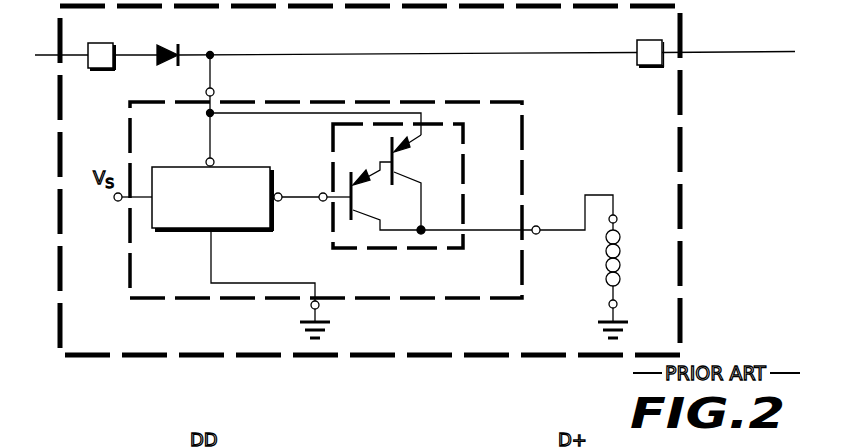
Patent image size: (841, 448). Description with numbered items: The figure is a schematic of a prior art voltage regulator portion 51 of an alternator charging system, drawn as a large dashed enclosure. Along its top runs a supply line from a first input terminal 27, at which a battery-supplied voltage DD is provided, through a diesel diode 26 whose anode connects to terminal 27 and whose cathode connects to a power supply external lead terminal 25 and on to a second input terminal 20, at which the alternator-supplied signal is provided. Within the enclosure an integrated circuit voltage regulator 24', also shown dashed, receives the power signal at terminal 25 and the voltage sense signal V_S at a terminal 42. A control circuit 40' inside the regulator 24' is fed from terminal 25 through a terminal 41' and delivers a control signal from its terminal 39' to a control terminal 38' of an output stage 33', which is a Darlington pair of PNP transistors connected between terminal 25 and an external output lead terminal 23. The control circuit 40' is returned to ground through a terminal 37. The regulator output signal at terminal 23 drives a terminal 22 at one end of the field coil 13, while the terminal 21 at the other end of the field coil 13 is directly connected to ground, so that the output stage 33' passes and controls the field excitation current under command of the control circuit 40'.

The field coil 13 is at (621, 252).
The second input terminal 20 is at (637, 66).
The terminal 21 is at (618, 304).
The terminal 22 is at (618, 219).
The external output lead terminal 23 is at (540, 227).
The integrated circuit voltage regulator 24' is at (326, 180).
The power supply external lead terminal 25 is at (214, 93).
The diesel diode 26 is at (178, 46).
The first input terminal 27 is at (101, 71).
The output stage 33' is at (425, 186).
The ground terminal 37 is at (311, 308).
The control terminal 38' is at (316, 184).
The control circuit output terminal 39' is at (299, 213).
The control circuit 40' is at (210, 221).
The control circuit supply terminal 41' is at (235, 153).
The terminal 42 is at (114, 197).
The voltage regulator portion 51 is at (682, 203).